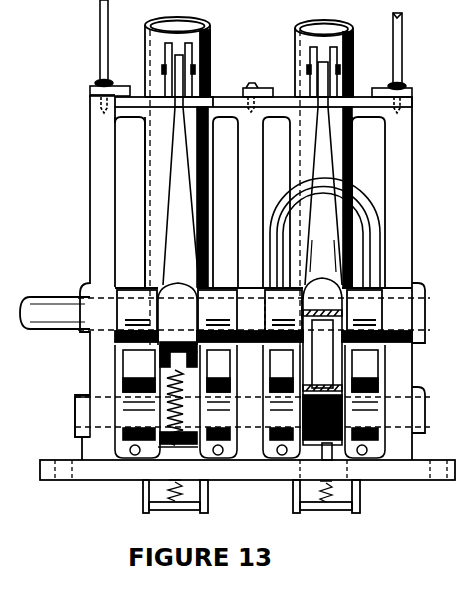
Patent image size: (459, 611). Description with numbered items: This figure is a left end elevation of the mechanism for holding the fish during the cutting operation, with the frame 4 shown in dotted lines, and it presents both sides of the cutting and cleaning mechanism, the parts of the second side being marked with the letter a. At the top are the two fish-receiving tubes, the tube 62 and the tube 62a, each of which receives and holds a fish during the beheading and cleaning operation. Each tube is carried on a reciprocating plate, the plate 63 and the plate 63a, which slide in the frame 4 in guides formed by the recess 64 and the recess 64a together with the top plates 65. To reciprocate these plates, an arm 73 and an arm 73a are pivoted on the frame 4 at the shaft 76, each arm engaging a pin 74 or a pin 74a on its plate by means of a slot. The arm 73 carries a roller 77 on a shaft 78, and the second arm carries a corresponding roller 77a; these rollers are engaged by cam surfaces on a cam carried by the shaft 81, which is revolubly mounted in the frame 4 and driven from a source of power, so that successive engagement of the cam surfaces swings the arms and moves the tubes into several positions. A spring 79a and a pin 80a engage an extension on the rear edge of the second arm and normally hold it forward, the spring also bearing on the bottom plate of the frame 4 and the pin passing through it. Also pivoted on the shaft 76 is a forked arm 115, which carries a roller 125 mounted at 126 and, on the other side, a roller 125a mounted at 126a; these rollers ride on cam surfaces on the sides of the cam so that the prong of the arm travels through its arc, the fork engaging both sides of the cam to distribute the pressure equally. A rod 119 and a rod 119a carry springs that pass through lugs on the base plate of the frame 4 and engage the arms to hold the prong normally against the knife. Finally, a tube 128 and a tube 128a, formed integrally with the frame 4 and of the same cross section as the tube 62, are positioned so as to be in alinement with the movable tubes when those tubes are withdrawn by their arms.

The frame 4 is at (412, 120).
The tube 62 is at (353, 63).
The tube 62a is at (209, 50).
The plate 63 is at (362, 100).
The plate 63a is at (214, 97).
The recess 64 is at (400, 84).
The recess 64a is at (100, 99).
The top plates 65 is at (100, 82).
The arm 73 is at (323, 150).
The arm 73a is at (180, 160).
The pin 74 is at (310, 72).
The pin 74a is at (163, 69).
The pivot shaft 76 is at (75, 411).
The roller 77 is at (323, 330).
The roller 77a is at (182, 335).
The shaft 78 is at (322, 256).
The spring 79a is at (160, 455).
The pin 80a is at (163, 437).
The shaft 81 is at (60, 307).
The arm 115 is at (373, 257).
The rod 119 is at (368, 450).
The rod 119a is at (135, 456).
The roller 125 is at (282, 348).
The roller 125a is at (133, 360).
The roller mounting 126 is at (283, 372).
The roller mounting 126a is at (133, 370).
The tube 128 is at (355, 158).
The tube 128a is at (145, 173).